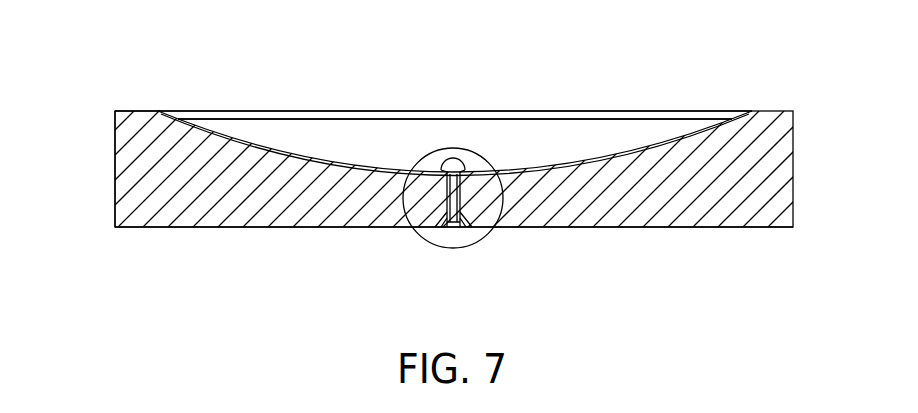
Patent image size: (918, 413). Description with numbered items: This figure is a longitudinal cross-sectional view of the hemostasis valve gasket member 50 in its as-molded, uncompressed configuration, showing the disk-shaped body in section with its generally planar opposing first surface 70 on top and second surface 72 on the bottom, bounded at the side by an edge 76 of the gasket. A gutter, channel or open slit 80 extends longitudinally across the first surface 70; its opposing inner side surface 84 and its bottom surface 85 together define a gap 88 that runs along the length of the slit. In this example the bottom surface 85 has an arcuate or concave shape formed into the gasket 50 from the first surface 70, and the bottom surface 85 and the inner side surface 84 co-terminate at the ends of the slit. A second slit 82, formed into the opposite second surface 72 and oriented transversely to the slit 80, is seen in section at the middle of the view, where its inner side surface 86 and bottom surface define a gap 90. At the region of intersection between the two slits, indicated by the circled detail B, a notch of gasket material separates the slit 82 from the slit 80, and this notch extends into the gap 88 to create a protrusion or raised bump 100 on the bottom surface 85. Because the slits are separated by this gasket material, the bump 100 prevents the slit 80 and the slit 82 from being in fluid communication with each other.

The hemostasis valve gasket member 50 is at (757, 90).
The first surface 70 is at (186, 228).
The second surface 72 is at (146, 111).
The side edge 76 is at (113, 166).
The slit 80 is at (638, 110).
The inner side surface 84 is at (265, 127).
The bottom surface 85 is at (593, 157).
The gap 88 is at (357, 143).
The detail region B is at (423, 232).
The bump 100 is at (455, 157).
The gap 90 is at (458, 228).
The inner side surface 86 is at (433, 228).
The slit 82 is at (488, 228).